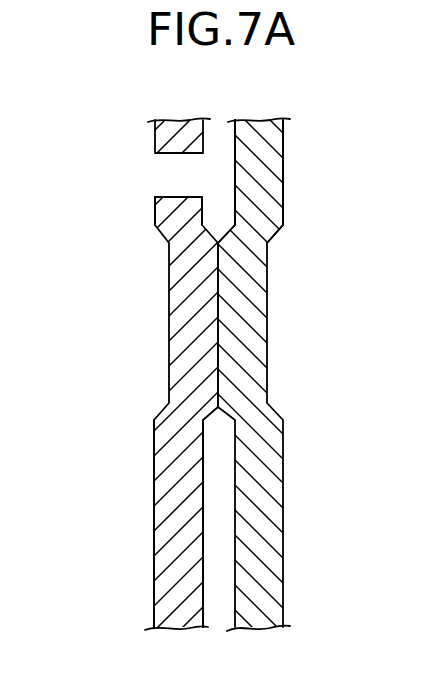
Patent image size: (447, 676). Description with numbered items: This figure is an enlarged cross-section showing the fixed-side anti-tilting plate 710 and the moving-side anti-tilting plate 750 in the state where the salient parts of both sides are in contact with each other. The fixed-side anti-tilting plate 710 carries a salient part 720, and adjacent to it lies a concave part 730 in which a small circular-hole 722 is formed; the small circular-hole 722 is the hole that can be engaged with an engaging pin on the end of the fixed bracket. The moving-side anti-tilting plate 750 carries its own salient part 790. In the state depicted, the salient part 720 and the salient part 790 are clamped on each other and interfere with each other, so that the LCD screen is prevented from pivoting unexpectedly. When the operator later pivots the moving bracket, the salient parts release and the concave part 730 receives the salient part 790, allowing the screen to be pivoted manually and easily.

The fixed-side anti-tilting plate 710 is at (180, 590).
The salient part 720 is at (197, 328).
The small circular-hole 722 is at (180, 173).
The concave part 730 is at (173, 129).
The moving-side anti-tilting plate 750 is at (258, 168).
The salient part 790 is at (248, 308).